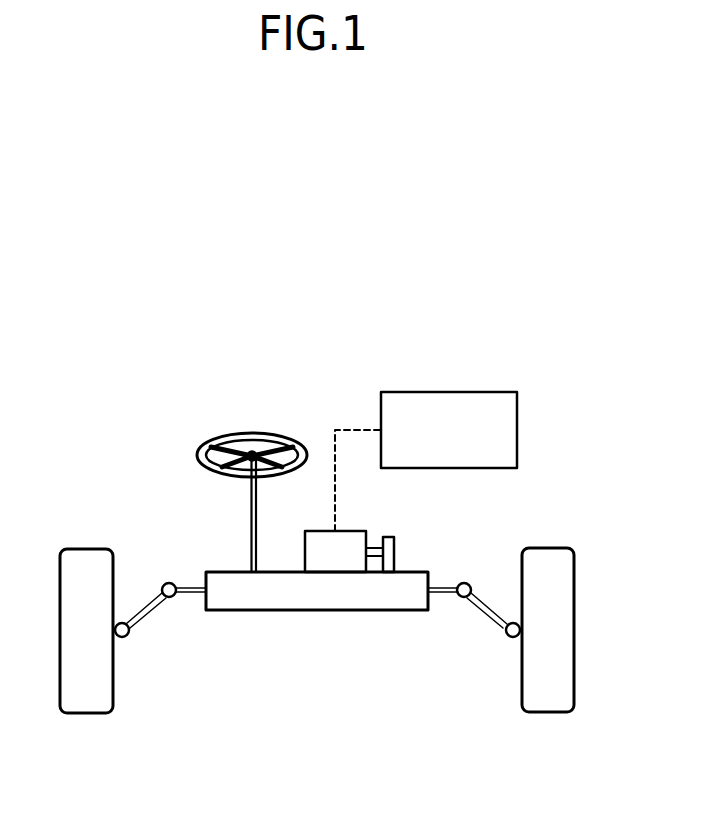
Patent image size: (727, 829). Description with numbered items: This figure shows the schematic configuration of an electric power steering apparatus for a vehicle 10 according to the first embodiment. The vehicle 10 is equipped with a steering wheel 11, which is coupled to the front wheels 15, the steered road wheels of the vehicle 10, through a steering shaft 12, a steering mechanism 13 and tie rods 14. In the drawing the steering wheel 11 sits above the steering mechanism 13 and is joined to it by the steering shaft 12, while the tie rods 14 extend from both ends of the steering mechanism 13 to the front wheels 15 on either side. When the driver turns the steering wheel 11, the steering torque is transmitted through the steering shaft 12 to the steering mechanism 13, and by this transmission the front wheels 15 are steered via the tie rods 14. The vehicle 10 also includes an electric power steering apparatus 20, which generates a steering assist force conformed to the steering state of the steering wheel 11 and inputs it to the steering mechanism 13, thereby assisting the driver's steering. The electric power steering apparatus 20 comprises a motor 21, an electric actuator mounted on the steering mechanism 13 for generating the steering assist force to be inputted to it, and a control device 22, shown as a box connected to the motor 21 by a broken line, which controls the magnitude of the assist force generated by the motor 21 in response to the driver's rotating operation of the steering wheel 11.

The vehicle 10 is at (502, 286).
The steering wheel 11 is at (224, 433).
The steering shaft 12 is at (251, 523).
The steering mechanism 13 is at (403, 603).
The tie rods 14 is at (189, 583).
The front wheels 15 is at (79, 546).
The electric power steering apparatus 20 is at (316, 400).
The motor 21 is at (350, 531).
The control device 22 is at (517, 405).